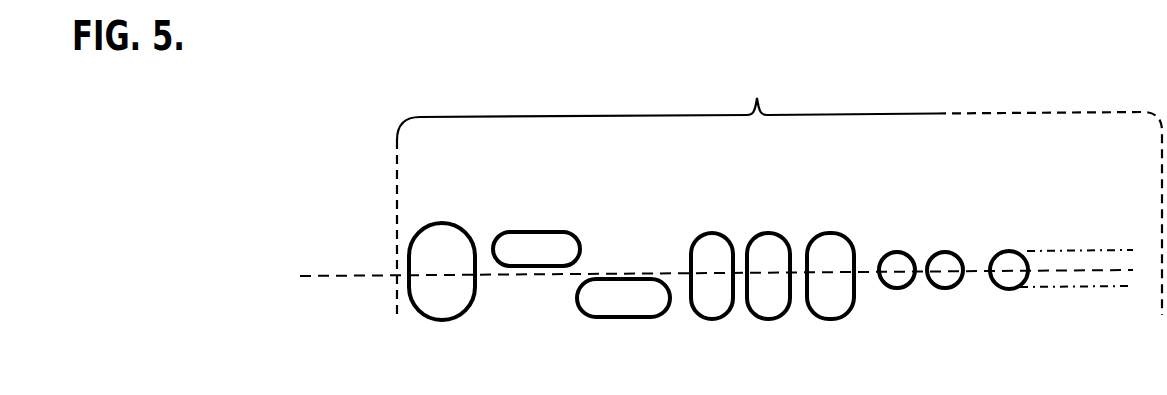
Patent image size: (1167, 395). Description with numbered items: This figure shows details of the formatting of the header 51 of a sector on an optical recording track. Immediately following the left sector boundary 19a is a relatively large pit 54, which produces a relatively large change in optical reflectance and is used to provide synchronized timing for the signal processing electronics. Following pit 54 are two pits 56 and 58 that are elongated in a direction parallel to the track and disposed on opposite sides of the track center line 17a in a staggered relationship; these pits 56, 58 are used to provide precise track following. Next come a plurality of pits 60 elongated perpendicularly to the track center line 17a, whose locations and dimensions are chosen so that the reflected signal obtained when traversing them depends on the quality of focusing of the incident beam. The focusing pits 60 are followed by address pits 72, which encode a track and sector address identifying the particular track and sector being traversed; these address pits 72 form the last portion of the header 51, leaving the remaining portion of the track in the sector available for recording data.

The header 51 is at (779, 190).
The left sector boundary 19a is at (397, 197).
The track center line 17a is at (348, 275).
The pit 54 is at (434, 230).
The pit 56 is at (508, 233).
The pit 58 is at (618, 306).
The pits 60 is at (859, 318).
The address pits 72 is at (1042, 242).